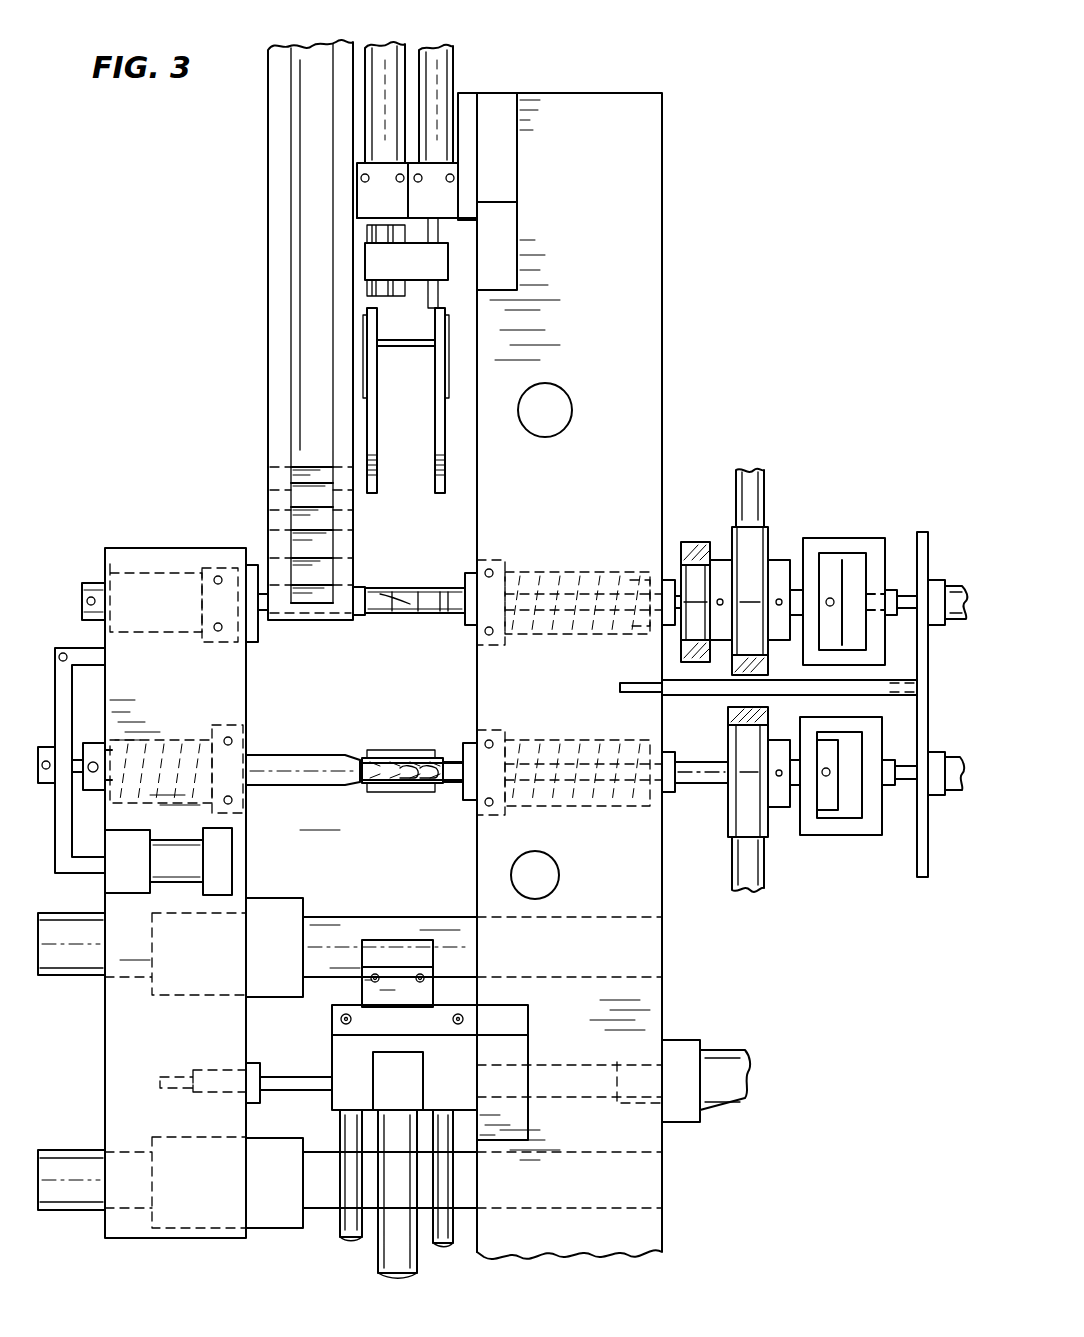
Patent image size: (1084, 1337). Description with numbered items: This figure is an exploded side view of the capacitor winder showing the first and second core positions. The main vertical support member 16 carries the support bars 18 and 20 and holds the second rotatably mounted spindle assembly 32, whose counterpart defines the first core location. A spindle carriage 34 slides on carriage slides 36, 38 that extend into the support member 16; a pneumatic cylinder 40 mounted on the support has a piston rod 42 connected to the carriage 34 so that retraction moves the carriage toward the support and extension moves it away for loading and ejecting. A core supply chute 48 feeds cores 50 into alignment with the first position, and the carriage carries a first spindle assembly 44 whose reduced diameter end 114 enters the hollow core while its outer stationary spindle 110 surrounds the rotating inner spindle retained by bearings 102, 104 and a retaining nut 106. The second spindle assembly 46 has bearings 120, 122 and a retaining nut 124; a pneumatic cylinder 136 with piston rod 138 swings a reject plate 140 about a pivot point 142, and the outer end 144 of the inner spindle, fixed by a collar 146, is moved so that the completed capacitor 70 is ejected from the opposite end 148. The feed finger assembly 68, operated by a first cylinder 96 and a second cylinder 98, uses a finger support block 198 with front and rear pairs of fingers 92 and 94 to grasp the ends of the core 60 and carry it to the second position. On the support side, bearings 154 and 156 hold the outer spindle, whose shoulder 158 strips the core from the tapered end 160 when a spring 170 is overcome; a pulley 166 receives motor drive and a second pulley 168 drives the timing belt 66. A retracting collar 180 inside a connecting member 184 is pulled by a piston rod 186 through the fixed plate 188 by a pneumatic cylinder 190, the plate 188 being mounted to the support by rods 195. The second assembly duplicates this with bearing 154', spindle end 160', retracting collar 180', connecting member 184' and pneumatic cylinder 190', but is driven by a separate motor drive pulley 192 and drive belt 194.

The main vertical support member 16 is at (598, 232).
The support bar 18 is at (553, 402).
The support bar 20 is at (556, 876).
The second rotatably mounted spindle assembly 32 is at (465, 800).
The spindle carriage 34 is at (186, 690).
The carriage slide 36 is at (378, 920).
The carriage slide 38 is at (316, 1208).
The pneumatic cylinder 40 is at (716, 1055).
The piston rod 42 is at (288, 1082).
The first spindle assembly 44 is at (359, 626).
The second spindle assembly 46 is at (300, 778).
The core supply chute 48 is at (300, 254).
The core 50 is at (300, 465).
The core 60 is at (430, 992).
The timing belt 66 is at (755, 498).
The feed finger assembly 68 is at (464, 352).
The completed capacitor 70 is at (420, 782).
The front pair of fingers 92 is at (372, 412).
The rear pair of fingers 94 is at (437, 438).
The first cylinder 96 is at (440, 76).
The second cylinder 98 is at (375, 52).
The bearing 102 is at (118, 578).
The bearing 104 is at (215, 572).
The retaining nut 106 is at (90, 588).
The outer stationary spindle 110 is at (254, 636).
The reduced diameter end 114 is at (382, 614).
The bearing 120 is at (114, 798).
The bearing 122 is at (236, 806).
The retaining nut 124 is at (108, 744).
The pneumatic cylinder 136 is at (192, 874).
The piston rod 138 is at (92, 860).
The reject plate 140 is at (56, 845).
The pivot point 142 is at (62, 650).
The outer end of inner spindle 144 is at (86, 745).
The collar 146 is at (46, 784).
The opposite end of inner spindle 148 is at (390, 775).
The bearing 154 is at (507, 585).
The bearing 154' is at (569, 756).
The bearing 156 is at (640, 582).
The longitudinally extending shoulder 158 is at (466, 590).
The end of inner spindle 160 is at (428, 627).
The end of inner spindle 160' is at (454, 756).
The pulley 166 is at (682, 562).
The second pulley 168 is at (760, 568).
The spring 170 is at (566, 580).
The retracting collar 180 is at (849, 579).
The retracting collar 180' is at (816, 799).
The connecting member 184 is at (867, 587).
The connecting member 184' is at (841, 792).
The piston rod 186 is at (905, 608).
The fixed plate 188 is at (920, 832).
The pneumatic cylinder 190 is at (952, 618).
The pneumatic cylinder 190' is at (956, 791).
The motor drive pulley 192 is at (740, 790).
The drive belt 194 is at (725, 865).
The rod 195 is at (676, 688).
The finger support block 198 is at (440, 262).